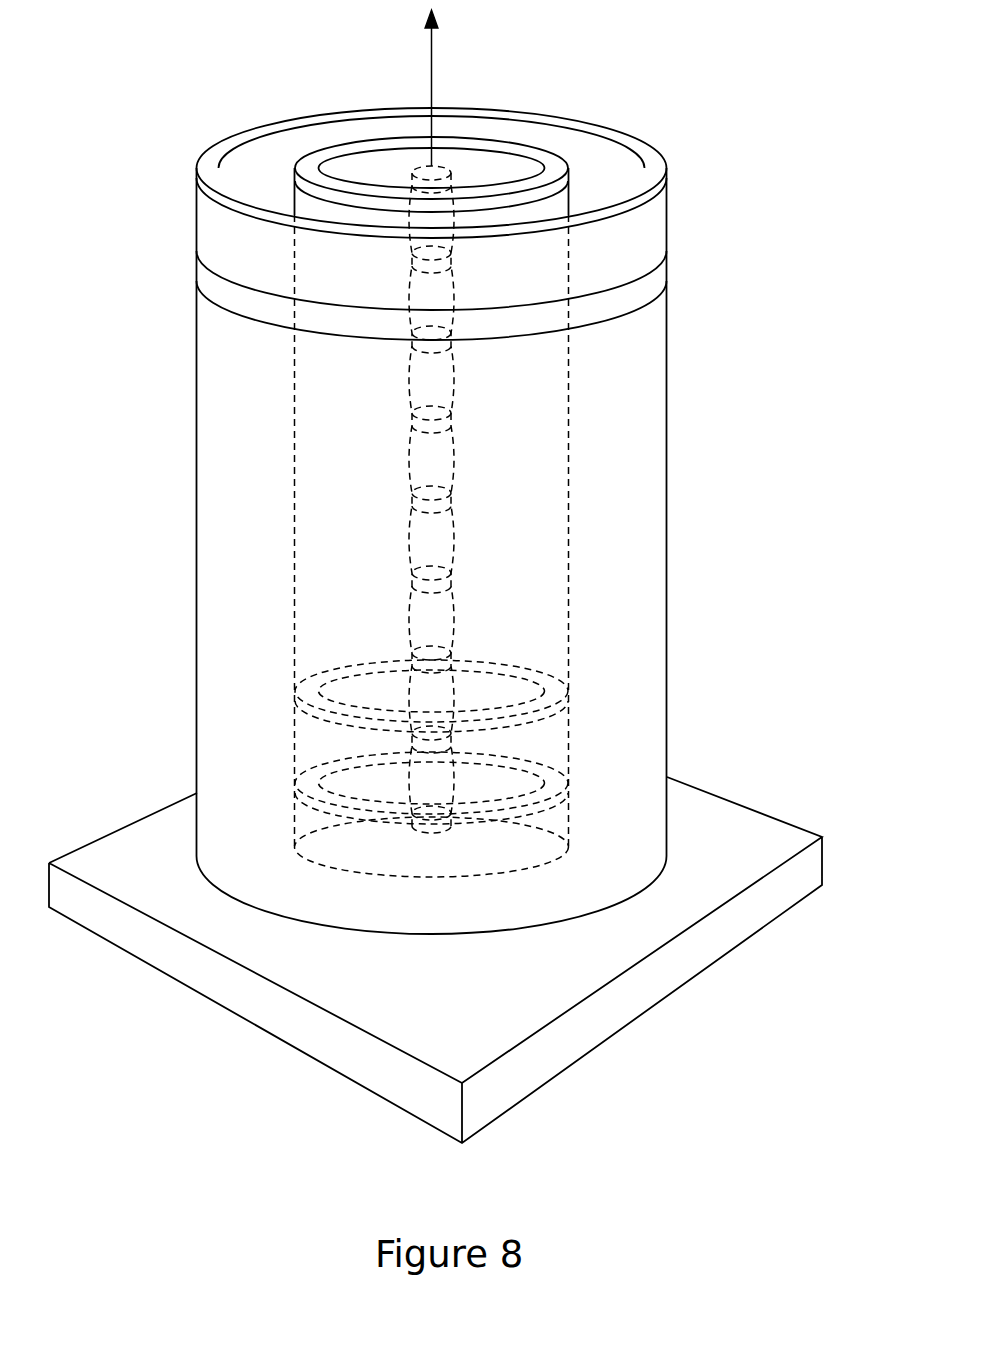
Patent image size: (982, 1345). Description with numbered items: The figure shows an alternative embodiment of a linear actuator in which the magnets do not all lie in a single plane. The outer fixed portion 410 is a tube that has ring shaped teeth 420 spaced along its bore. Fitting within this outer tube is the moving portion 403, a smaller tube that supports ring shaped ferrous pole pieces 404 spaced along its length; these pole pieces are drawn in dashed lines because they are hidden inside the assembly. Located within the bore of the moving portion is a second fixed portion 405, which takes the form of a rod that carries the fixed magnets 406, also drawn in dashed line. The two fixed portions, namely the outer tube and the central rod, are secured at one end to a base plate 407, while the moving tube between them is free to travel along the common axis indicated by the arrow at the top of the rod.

The moving portion 403 is at (493, 138).
The ring shaped ferrous pole pieces 404 is at (537, 702).
The second fixed portion 405 is at (418, 167).
The fixed magnets 406 is at (412, 412).
The base plate 407 is at (677, 988).
The outer fixed portion 410 is at (652, 167).
The ring shaped teeth 420 is at (643, 270).